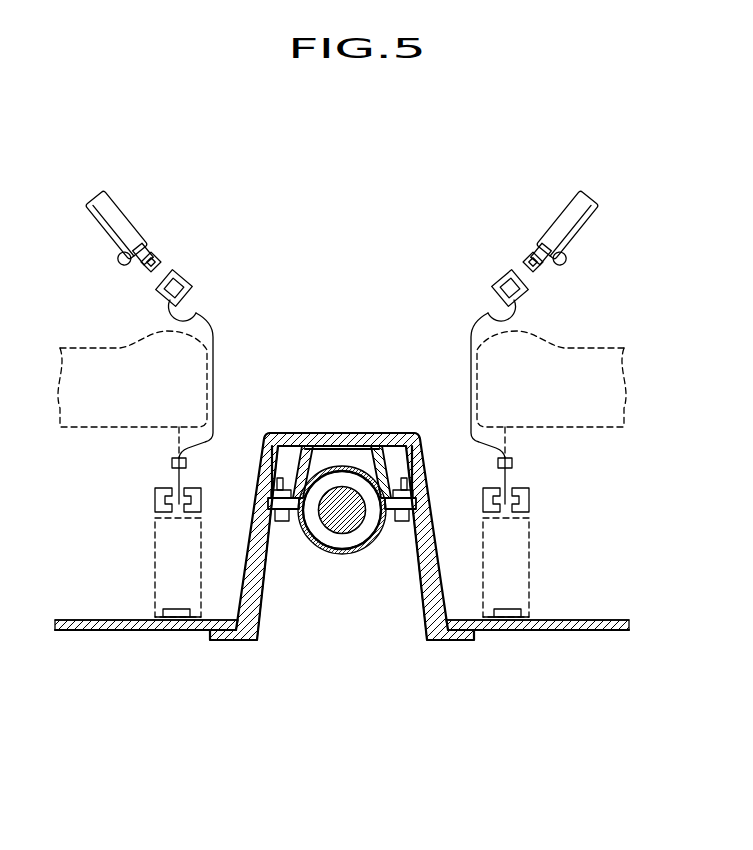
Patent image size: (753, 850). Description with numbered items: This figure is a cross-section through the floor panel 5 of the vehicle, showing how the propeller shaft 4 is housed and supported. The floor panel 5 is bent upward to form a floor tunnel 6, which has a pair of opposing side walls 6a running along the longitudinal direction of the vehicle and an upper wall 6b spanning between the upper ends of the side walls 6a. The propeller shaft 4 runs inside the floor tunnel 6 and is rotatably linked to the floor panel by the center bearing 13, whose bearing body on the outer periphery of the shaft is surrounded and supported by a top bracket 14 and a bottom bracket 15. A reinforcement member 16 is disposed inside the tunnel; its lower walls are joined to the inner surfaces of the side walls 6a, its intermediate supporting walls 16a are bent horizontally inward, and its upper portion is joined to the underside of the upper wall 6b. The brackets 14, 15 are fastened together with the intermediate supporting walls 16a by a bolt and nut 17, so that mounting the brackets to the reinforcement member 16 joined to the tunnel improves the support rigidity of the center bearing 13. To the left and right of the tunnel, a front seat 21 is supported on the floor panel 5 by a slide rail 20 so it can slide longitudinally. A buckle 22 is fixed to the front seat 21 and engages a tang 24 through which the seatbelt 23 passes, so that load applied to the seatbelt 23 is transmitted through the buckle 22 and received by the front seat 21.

The propeller shaft 4 is at (353, 524).
The floor panel 5 is at (565, 633).
The floor tunnel 6 is at (330, 432).
The side walls 6a is at (396, 433).
The upper wall 6b is at (251, 555).
The center bearing 13 is at (353, 480).
The top bracket 14 is at (317, 464).
The bottom bracket 15 is at (327, 557).
The reinforcement member 16 is at (264, 625).
The intermediate supporting walls 16a is at (256, 492).
The bolt and nut 17 is at (281, 523).
The slide rail 20 is at (155, 562).
The front seat 21 is at (92, 347).
The buckle 22 is at (195, 282).
The seatbelt 23 is at (123, 200).
The tang 24 is at (160, 250).